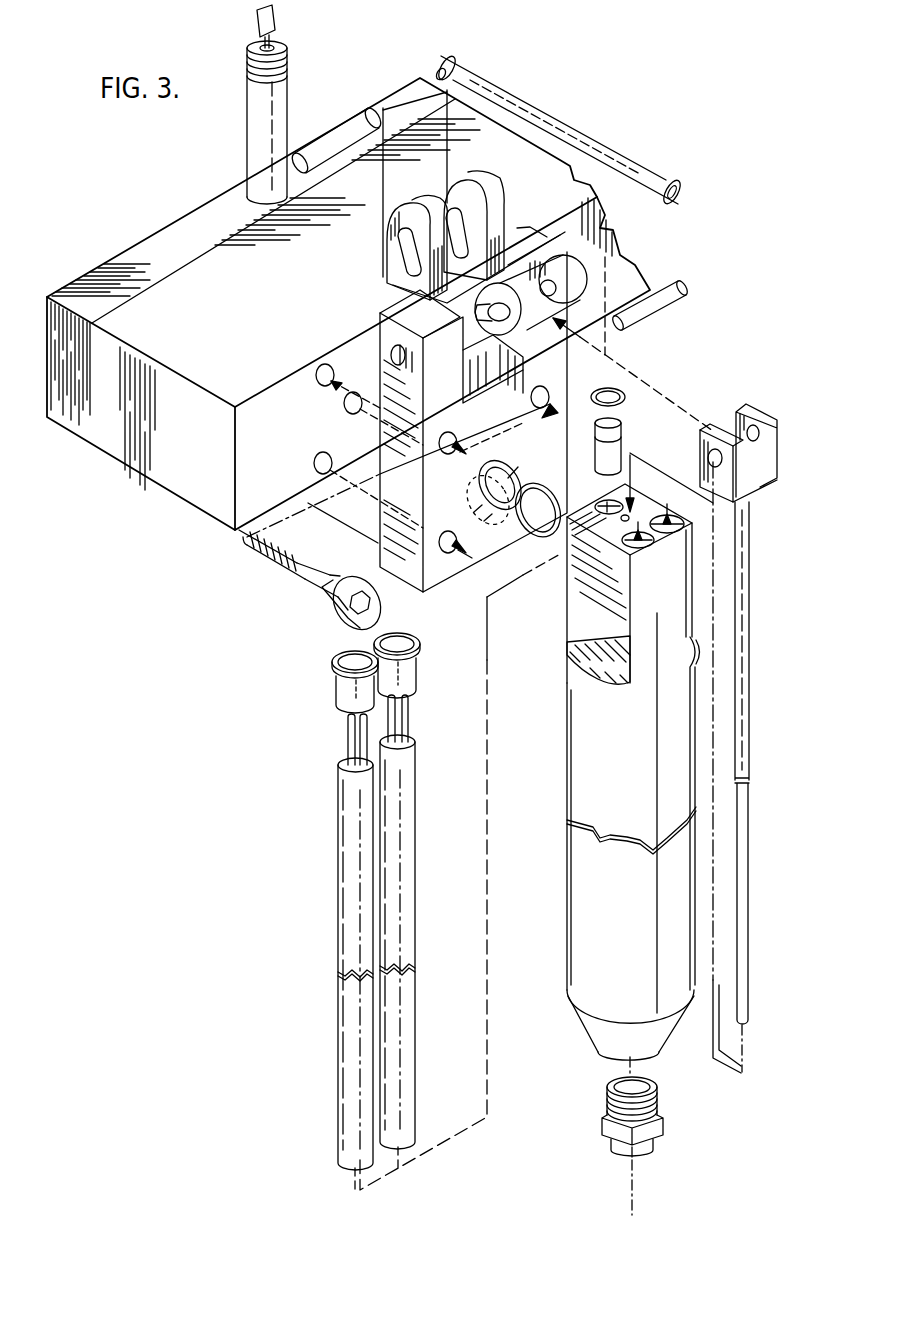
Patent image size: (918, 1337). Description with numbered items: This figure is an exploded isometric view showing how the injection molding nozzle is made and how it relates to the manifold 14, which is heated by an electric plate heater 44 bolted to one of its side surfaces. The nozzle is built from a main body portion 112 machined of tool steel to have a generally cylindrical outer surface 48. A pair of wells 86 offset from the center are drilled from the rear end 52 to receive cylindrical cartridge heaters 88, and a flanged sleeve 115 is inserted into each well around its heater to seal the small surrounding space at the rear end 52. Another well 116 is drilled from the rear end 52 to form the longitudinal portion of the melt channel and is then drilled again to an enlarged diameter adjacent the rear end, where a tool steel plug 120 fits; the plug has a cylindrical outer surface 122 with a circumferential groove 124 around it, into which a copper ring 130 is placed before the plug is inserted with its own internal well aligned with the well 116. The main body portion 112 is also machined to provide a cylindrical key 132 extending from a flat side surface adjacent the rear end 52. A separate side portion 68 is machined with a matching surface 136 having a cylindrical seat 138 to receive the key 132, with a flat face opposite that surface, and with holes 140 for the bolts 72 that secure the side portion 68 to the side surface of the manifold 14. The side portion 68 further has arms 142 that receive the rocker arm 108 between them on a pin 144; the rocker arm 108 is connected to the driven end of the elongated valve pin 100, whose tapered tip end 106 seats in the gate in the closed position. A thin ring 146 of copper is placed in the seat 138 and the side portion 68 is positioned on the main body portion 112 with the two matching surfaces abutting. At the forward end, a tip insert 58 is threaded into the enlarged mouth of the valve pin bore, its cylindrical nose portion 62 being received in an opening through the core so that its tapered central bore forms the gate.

The manifold 14 is at (170, 472).
The electric plate heater 44 is at (88, 420).
The cylindrical outer surface 48 is at (609, 748).
The rear end 52 is at (695, 505).
The tip insert 58 is at (609, 1141).
The cylindrical nose portion 62 is at (612, 1147).
The side portion 68 is at (378, 548).
The bolts 72 is at (306, 585).
The wells 86 is at (668, 545).
The cartridge heaters 88 is at (384, 862).
The valve pin 100 is at (740, 698).
The tapered tip end 106 is at (735, 1027).
The rocker arm 108 is at (490, 218).
The main body portion 112 is at (577, 925).
The flanged sleeve 115 is at (372, 692).
The well 116 is at (597, 496).
The plug 120 is at (648, 441).
The cylindrical outer surface 122 is at (621, 430).
The circumferential groove 124 is at (632, 456).
The copper ring 130 is at (616, 388).
The cylindrical key 132 is at (568, 572).
The matching surface 136 is at (468, 534).
The cylindrical seat 138 is at (490, 524).
The holes 140 is at (447, 497).
The arms 142 is at (378, 333).
The pin 144 is at (686, 283).
The thin ring 146 is at (538, 540).